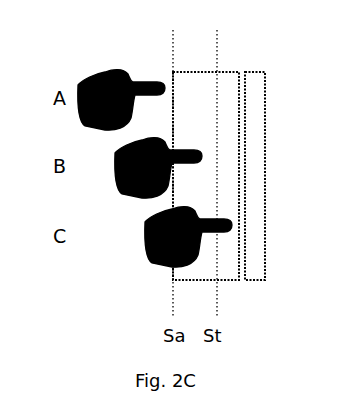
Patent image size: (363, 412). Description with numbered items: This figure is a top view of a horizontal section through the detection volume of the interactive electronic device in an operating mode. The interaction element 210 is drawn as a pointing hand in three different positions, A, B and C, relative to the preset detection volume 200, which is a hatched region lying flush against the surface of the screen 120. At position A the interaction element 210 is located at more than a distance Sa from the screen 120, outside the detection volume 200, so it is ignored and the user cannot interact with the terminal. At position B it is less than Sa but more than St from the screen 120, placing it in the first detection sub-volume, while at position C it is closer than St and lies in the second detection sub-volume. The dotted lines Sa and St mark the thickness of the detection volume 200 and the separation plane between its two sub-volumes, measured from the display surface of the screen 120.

The interaction element 210 is at (91, 76).
The preset detection volume 200 is at (202, 98).
The screen 120 is at (255, 133).